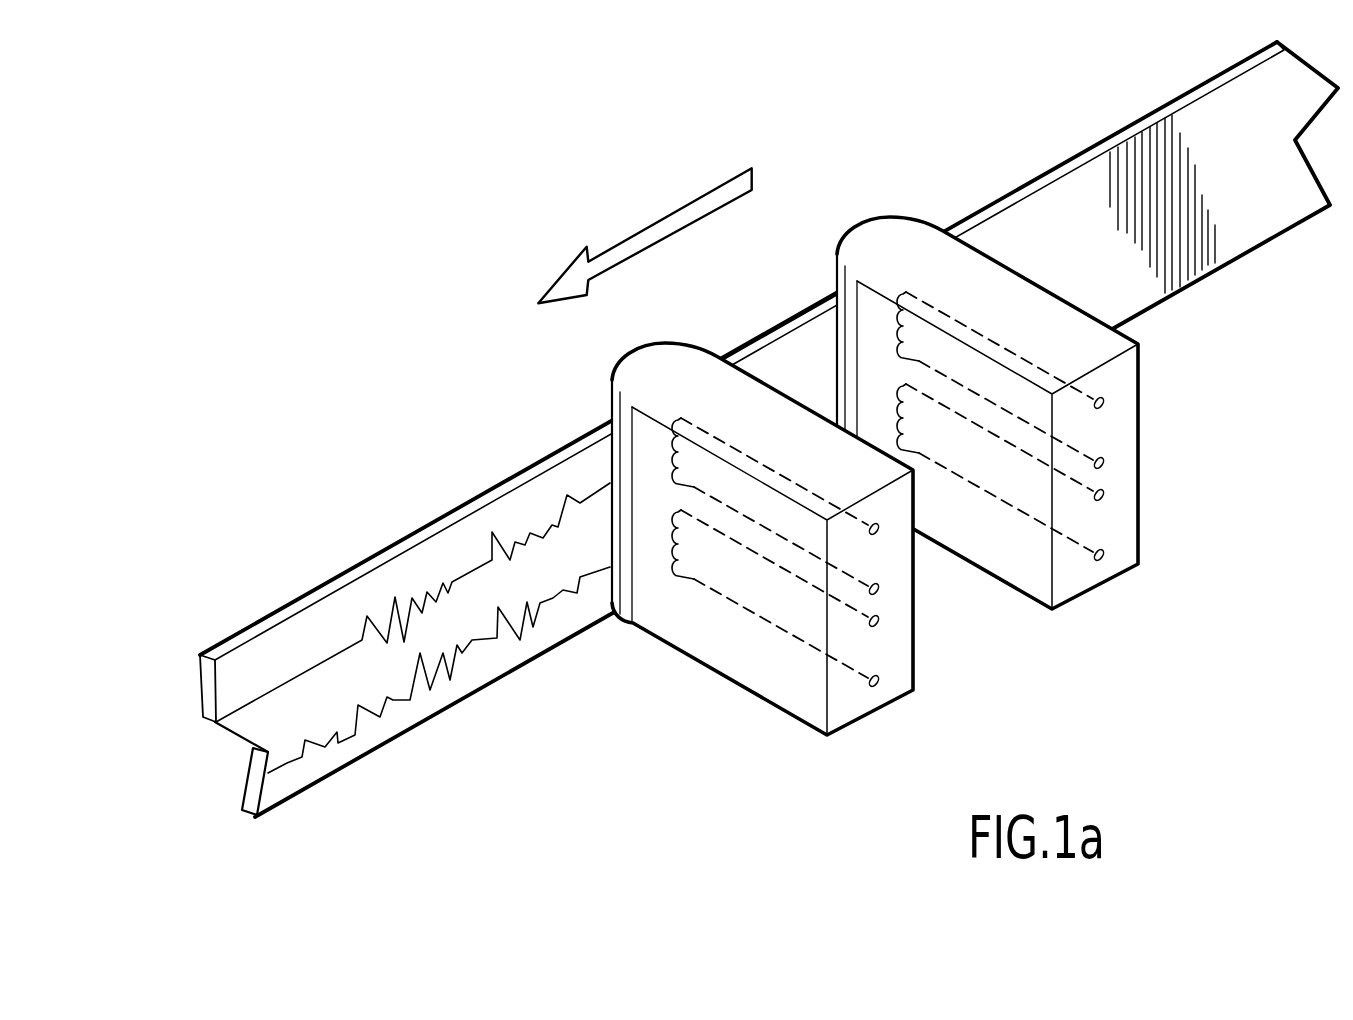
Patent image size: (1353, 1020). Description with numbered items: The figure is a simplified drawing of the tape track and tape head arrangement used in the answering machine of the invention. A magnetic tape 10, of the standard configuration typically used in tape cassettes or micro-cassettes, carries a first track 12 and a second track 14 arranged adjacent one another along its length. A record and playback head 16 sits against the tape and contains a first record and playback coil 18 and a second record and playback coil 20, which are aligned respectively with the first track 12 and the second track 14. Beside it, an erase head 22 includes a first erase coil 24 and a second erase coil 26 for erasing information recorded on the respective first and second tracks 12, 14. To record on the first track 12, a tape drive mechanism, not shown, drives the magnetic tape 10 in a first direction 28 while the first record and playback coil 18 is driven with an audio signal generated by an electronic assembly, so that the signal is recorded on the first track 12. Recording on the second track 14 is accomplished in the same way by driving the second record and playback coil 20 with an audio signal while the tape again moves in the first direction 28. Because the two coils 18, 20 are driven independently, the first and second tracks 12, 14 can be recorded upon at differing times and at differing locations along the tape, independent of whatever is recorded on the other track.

The magnetic tape 10 is at (460, 513).
The first track 12 is at (280, 776).
The second track 14 is at (305, 670).
The record and playback head 16 is at (665, 373).
The first record and playback coil 18 is at (707, 587).
The second record and playback coil 20 is at (800, 483).
The erase head 22 is at (905, 237).
The first erase coil 24 is at (993, 435).
The second erase coil 26 is at (1028, 360).
The first direction 28 is at (662, 217).